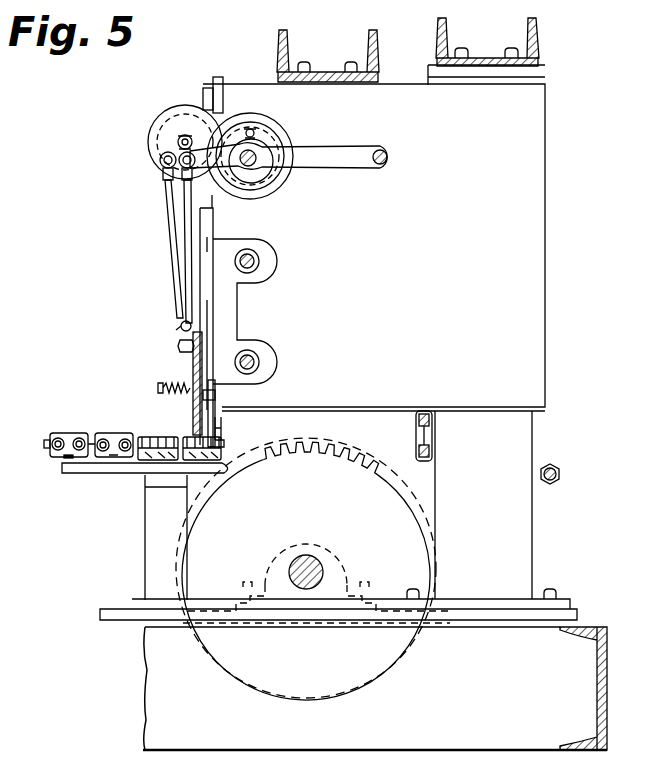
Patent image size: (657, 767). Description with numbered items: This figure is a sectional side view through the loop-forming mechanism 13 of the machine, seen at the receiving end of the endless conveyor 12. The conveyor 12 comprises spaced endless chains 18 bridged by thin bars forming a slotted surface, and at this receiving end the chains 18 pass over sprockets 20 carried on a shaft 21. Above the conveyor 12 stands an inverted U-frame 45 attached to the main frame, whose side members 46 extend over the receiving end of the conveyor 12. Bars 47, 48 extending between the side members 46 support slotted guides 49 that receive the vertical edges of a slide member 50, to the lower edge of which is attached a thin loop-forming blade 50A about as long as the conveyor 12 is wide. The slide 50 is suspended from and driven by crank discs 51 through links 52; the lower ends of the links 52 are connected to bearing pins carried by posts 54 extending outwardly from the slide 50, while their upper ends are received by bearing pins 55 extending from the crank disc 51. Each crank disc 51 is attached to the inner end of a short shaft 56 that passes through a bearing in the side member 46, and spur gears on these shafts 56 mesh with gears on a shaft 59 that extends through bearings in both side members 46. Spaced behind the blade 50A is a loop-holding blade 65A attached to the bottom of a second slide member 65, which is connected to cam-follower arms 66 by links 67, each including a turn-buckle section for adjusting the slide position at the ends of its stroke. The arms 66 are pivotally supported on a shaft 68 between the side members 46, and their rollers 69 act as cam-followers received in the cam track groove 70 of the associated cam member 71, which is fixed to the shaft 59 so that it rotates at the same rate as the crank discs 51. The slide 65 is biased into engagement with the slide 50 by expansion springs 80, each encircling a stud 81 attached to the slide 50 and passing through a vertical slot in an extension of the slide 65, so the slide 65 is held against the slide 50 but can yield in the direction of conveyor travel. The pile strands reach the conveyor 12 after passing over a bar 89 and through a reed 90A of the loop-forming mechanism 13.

The endless conveyor 12 is at (148, 467).
The loop-forming mechanism 13 is at (501, 215).
The endless chains 18 is at (68, 441).
The sprockets 20 is at (318, 472).
The shaft 21 is at (316, 568).
The inverted U-frame 45 is at (515, 509).
The side members 46 is at (528, 322).
The bar 47 is at (260, 263).
The bar 48 is at (258, 360).
The slotted guides 49 is at (225, 246).
The slide member 50 is at (207, 292).
The loop-forming blade 50A is at (216, 426).
The crank discs 51 is at (165, 136).
The links 52 is at (170, 220).
The posts 54 is at (180, 326).
The bearing pins 55 is at (163, 165).
The short shafts 56 is at (186, 136).
The shaft 59 is at (247, 168).
The second slide member 65 is at (193, 406).
The loop-holding blade 65A is at (205, 432).
The cam-follower arms 66 is at (345, 167).
The links 67 is at (182, 228).
The shaft 68 is at (392, 161).
The rollers 69 is at (262, 134).
The cam track groove 70 is at (284, 190).
The cam member 71 is at (284, 136).
The expansion springs 80 is at (172, 380).
The stud 81 is at (165, 388).
The bar 89 is at (556, 470).
The reed 90A is at (433, 437).